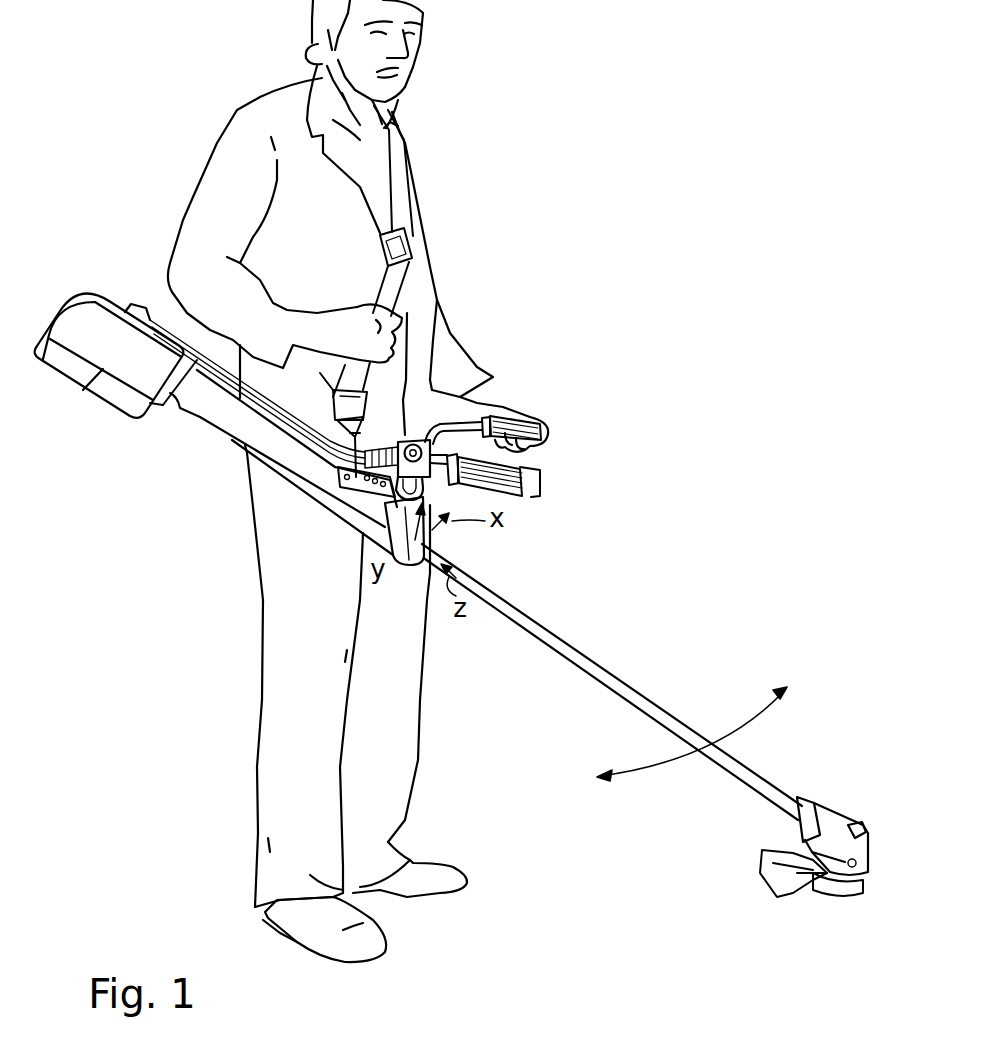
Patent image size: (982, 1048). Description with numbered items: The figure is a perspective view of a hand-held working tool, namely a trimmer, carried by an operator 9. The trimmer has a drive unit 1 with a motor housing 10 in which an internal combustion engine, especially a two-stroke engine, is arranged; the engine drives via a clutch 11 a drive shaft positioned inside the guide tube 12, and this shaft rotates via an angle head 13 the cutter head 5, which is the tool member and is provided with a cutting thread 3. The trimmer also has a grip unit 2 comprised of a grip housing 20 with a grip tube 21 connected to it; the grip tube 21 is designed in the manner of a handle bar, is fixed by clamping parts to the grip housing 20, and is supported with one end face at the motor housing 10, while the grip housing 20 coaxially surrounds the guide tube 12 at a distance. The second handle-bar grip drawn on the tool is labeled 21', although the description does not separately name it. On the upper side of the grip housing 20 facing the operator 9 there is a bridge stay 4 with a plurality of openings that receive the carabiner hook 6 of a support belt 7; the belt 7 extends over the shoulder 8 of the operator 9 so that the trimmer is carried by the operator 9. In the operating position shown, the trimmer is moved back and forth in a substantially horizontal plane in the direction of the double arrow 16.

The drive unit 1 is at (455, 637).
The grip unit 2 is at (335, 522).
The cutting thread 3 is at (862, 862).
The bridge stay 4 is at (345, 493).
The cutter head 5 is at (857, 893).
The carabiner hook 6 is at (377, 437).
The support belt 7 is at (390, 283).
The shoulder 8 is at (412, 158).
The operator 9 is at (250, 97).
The motor housing 10 is at (70, 390).
The clutch 11 is at (170, 403).
The guide tube 12 is at (609, 673).
The angle head 13 is at (837, 827).
The double arrow 16 is at (743, 722).
The grip housing 20 is at (283, 468).
The grip tube 21 is at (493, 400).
The second handlebar grip 21' is at (531, 475).